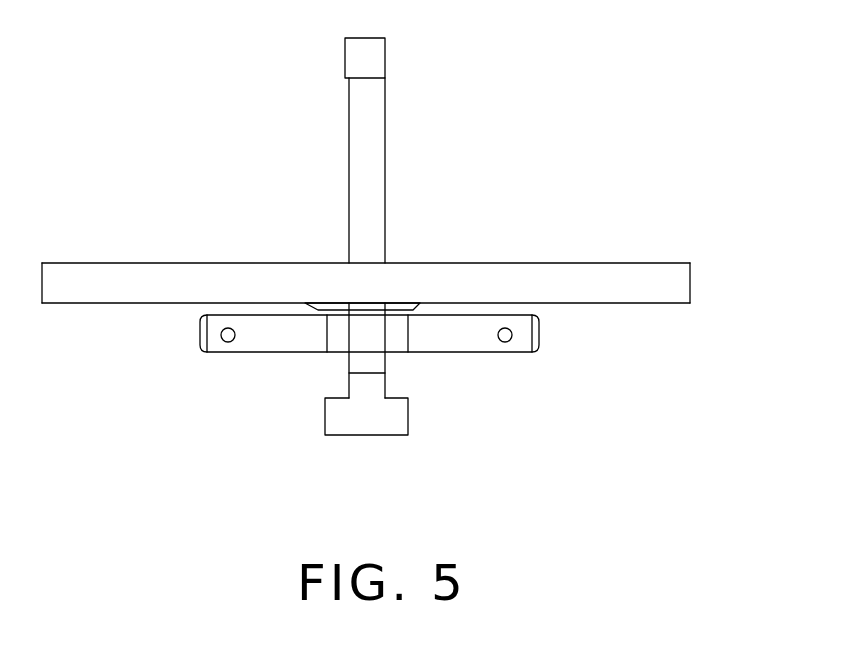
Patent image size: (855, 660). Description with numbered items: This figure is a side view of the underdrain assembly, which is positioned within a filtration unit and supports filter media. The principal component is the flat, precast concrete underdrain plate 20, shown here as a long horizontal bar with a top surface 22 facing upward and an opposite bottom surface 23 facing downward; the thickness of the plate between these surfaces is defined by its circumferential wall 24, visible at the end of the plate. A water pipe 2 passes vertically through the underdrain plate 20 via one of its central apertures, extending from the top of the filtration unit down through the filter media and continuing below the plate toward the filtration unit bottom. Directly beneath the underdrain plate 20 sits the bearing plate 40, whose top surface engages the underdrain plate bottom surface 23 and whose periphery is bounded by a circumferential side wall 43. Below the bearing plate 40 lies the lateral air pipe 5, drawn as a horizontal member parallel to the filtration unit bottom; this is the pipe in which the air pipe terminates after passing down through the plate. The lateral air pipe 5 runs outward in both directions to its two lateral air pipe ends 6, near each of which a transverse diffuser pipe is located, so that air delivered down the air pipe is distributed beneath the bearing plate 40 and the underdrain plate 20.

The water pipe 2 is at (386, 140).
The lateral air pipe 5 is at (273, 353).
The lateral air pipe end 6 is at (200, 342).
The underdrain plate 20 is at (410, 269).
The top surface 22 is at (590, 260).
The bottom surface 23 is at (613, 303).
The circumferential wall 24 is at (692, 283).
The bearing plate 40 is at (412, 305).
The circumferential side wall 43 is at (320, 304).